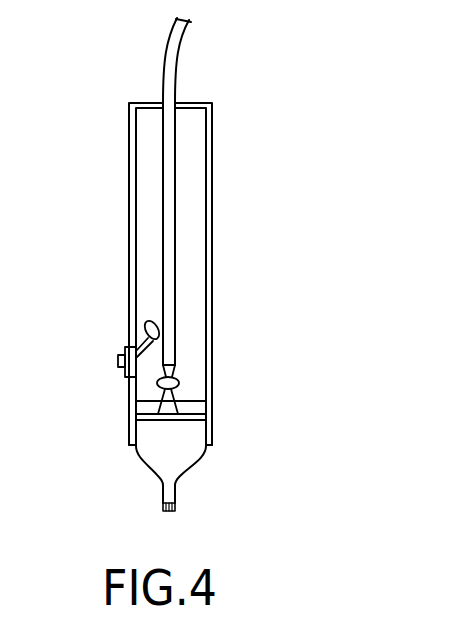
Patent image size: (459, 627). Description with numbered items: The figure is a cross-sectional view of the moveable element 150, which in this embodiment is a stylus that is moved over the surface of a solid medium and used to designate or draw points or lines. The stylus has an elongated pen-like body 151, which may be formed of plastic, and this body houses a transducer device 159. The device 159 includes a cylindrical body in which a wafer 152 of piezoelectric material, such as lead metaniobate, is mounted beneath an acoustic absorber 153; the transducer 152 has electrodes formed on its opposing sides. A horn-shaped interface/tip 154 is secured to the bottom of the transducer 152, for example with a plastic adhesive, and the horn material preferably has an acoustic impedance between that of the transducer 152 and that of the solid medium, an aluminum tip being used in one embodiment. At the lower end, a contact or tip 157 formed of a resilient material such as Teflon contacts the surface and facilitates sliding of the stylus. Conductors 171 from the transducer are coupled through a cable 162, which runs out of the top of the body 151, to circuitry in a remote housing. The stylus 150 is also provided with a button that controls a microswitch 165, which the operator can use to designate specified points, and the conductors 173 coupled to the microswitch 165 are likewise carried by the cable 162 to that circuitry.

The moveable element 150 is at (318, 161).
The elongated pen-like body 151 is at (133, 216).
The wafer of piezoelectric material 152 is at (210, 417).
The acoustic absorber 153 is at (202, 403).
The horn-shaped interface/tip 154 is at (178, 461).
The tip 157 is at (177, 508).
The transducer device 159 is at (190, 383).
The cable 162 is at (167, 150).
The microswitch 165 is at (125, 347).
The conductors 171 is at (158, 385).
The conductors 173 is at (150, 320).